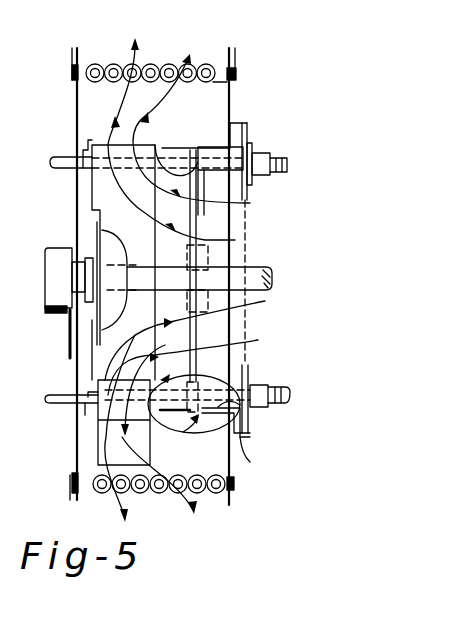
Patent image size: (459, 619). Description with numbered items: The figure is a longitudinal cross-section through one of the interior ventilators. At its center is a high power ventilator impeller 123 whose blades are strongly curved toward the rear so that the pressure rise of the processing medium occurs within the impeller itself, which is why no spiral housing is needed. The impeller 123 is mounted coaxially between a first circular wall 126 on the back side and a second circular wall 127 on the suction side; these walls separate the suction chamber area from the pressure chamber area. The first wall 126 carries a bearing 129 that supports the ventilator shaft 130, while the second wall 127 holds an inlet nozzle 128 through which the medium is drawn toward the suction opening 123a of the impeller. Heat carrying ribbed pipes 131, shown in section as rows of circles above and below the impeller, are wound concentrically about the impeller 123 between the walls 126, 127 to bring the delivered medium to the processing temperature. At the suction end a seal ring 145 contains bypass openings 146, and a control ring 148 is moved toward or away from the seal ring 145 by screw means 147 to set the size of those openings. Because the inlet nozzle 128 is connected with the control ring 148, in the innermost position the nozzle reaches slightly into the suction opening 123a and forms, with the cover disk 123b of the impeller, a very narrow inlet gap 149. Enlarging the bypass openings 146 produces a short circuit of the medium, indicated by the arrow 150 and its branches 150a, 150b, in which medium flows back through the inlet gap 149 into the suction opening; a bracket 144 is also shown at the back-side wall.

The ventilator impeller 123 is at (110, 408).
The suction opening 123a is at (200, 318).
The cover disk 123b is at (243, 158).
The first circular wall 126 is at (78, 458).
The second circular wall 127 is at (232, 465).
The inlet nozzle 128 is at (292, 390).
The bearing 129 is at (50, 256).
The ventilator shaft 130 is at (258, 278).
The ribbed pipes 131 is at (114, 66).
The bracket 144 is at (87, 140).
The seal ring 145 is at (170, 147).
The bypass openings 146 is at (208, 418).
The screw means 147 is at (270, 405).
The control ring 148 is at (212, 148).
The inlet gap 149 is at (247, 200).
The arrow 150 is at (160, 367).
The flow passage 150a is at (157, 50).
The flow passage 150b is at (190, 58).